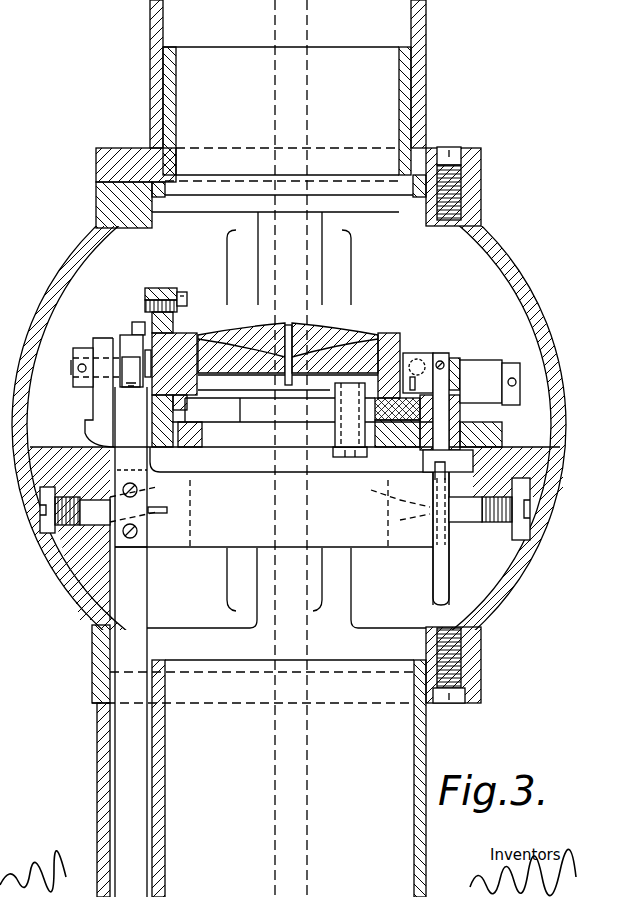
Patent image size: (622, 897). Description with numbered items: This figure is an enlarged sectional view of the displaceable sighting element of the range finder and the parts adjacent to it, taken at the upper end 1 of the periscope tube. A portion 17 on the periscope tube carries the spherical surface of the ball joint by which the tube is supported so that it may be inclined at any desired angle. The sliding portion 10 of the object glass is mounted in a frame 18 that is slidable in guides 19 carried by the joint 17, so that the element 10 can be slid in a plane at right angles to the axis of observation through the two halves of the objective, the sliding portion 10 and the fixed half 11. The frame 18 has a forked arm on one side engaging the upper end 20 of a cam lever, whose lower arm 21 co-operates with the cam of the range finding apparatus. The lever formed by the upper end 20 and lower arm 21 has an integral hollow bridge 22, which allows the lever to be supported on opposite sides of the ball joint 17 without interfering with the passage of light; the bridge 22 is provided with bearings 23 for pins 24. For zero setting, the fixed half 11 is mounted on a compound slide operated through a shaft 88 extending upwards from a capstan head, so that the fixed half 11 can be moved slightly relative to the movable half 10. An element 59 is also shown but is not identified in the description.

The upper end of periscope tube 1 is at (421, 106).
The ball joint portion 17 is at (521, 280).
The frame 18 is at (148, 342).
The upper end of cam lever 20 is at (128, 372).
The sliding portion of object glass 10 is at (222, 330).
The fixed half of object glass 11 is at (338, 328).
The adjusting pin 59 is at (470, 380).
The guides 19 is at (182, 447).
The bearings 23 is at (281, 503).
The pins 24 is at (65, 522).
The hollow bridge 22 is at (423, 537).
The shaft 88 is at (445, 587).
The lower arm of cam lever 21 is at (130, 805).